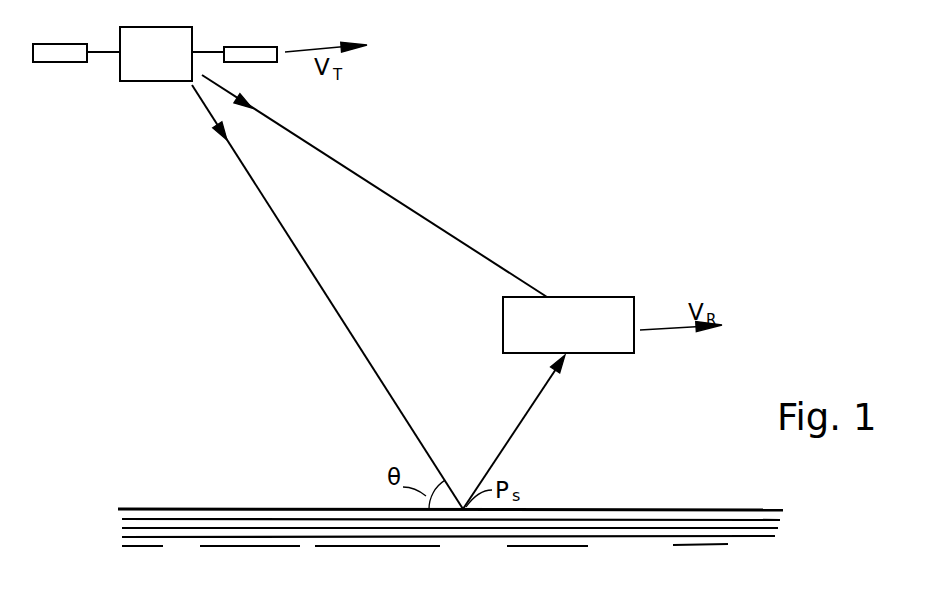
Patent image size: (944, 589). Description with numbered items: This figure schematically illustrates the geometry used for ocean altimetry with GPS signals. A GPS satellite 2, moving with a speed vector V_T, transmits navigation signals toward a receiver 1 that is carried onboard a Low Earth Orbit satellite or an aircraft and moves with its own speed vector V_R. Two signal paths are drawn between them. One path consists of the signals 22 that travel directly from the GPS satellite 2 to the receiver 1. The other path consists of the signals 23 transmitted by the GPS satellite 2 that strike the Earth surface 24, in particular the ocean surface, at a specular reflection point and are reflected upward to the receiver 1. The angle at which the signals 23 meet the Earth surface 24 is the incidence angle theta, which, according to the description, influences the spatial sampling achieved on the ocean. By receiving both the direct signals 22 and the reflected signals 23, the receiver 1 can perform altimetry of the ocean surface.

The receiver 1 is at (615, 298).
The GPS satellite 2 is at (190, 40).
The signals transmitted directly 22 is at (442, 225).
The reflected signals 23 is at (392, 395).
The Earth surface 24 is at (300, 509).